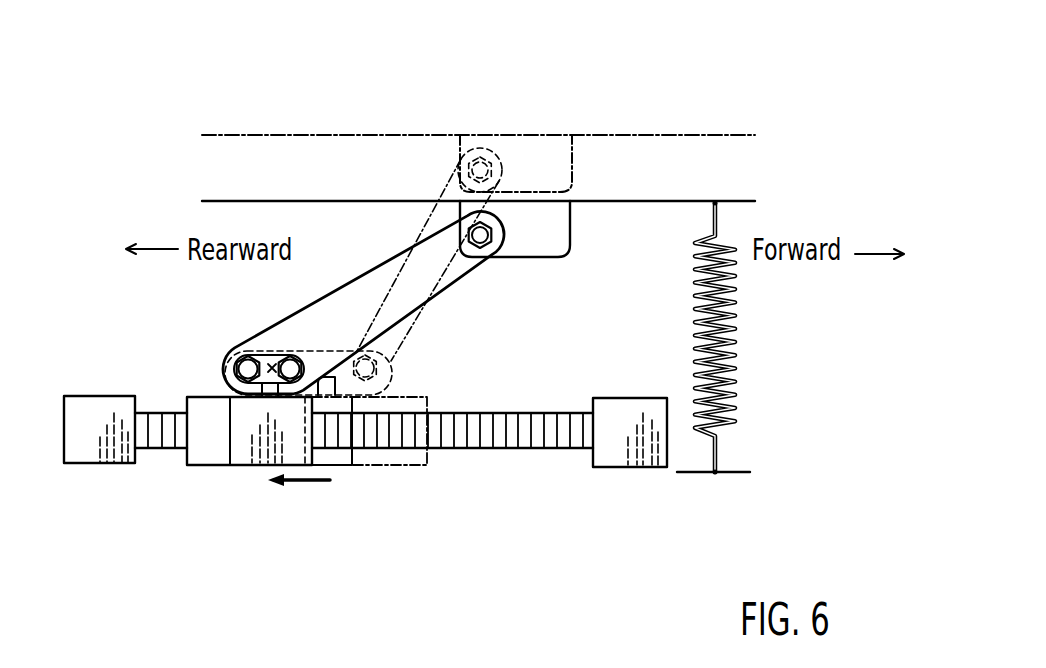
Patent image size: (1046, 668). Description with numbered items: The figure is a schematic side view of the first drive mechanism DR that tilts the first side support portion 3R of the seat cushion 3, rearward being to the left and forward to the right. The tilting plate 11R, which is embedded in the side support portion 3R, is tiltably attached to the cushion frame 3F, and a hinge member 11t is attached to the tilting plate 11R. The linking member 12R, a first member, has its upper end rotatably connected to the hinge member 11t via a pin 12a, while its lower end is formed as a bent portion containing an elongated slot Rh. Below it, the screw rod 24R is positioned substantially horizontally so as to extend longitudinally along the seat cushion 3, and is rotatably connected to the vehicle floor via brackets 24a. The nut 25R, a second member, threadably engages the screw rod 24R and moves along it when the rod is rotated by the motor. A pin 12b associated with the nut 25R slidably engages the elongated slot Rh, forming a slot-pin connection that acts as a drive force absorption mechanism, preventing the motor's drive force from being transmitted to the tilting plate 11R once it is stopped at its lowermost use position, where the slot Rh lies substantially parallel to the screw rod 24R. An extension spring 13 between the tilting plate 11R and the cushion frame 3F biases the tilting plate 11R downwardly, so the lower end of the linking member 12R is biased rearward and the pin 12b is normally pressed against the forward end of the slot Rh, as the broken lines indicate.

The seat cushion 3 is at (656, 112).
The side support portion 3R is at (478, 237).
The cushion frame 3F is at (737, 475).
The tilting plate 11R is at (612, 190).
The hinge member 11t is at (527, 237).
The linking member 12R is at (400, 297).
The pin 12a is at (482, 248).
The pin 12b is at (250, 358).
The elongated slot Rh is at (272, 362).
The extension spring 13 is at (736, 332).
The screw rod 24R is at (510, 440).
The bracket 24a is at (80, 448).
The nut 25R is at (213, 450).
The drive mechanism DR is at (564, 498).